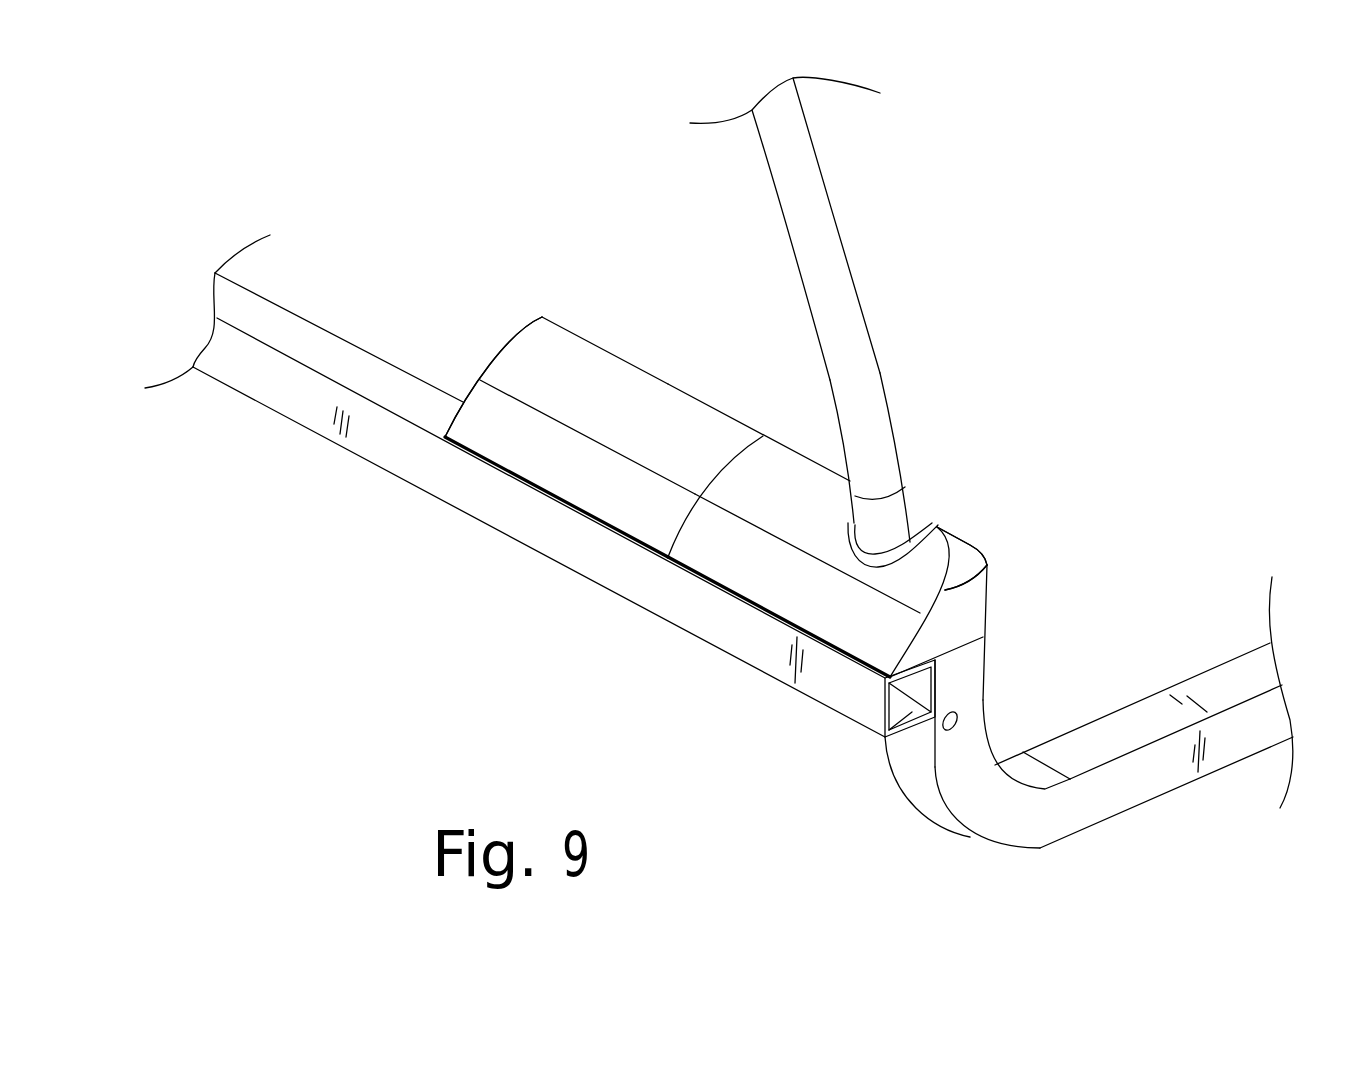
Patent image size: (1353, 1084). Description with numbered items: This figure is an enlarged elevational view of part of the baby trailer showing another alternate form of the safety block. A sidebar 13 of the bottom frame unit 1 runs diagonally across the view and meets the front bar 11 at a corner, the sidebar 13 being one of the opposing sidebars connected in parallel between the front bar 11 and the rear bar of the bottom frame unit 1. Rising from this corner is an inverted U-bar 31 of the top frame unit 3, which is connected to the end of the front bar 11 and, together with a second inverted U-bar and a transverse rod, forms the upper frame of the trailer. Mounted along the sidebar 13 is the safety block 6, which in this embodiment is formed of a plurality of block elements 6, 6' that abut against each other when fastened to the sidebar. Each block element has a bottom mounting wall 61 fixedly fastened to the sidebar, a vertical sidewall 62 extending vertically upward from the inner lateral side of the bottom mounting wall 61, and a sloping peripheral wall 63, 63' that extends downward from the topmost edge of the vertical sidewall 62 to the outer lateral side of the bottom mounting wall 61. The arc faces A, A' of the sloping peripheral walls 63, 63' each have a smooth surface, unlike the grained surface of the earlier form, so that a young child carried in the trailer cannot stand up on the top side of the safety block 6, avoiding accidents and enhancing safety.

The bottom frame unit 1 is at (285, 433).
The front bar 11 is at (1113, 818).
The sidebar 13 is at (482, 522).
The top frame unit 3 is at (850, 175).
The inverted U-bar 31 is at (866, 318).
The safety block 6 is at (811, 497).
The block element 6' is at (574, 379).
The bottom mounting wall 61 is at (950, 648).
The vertical sidewall 62 is at (987, 608).
The sloping peripheral wall 63 is at (1061, 528).
The sloping peripheral wall 63' is at (493, 290).
The arc face A is at (900, 437).
The arc face A' is at (454, 323).